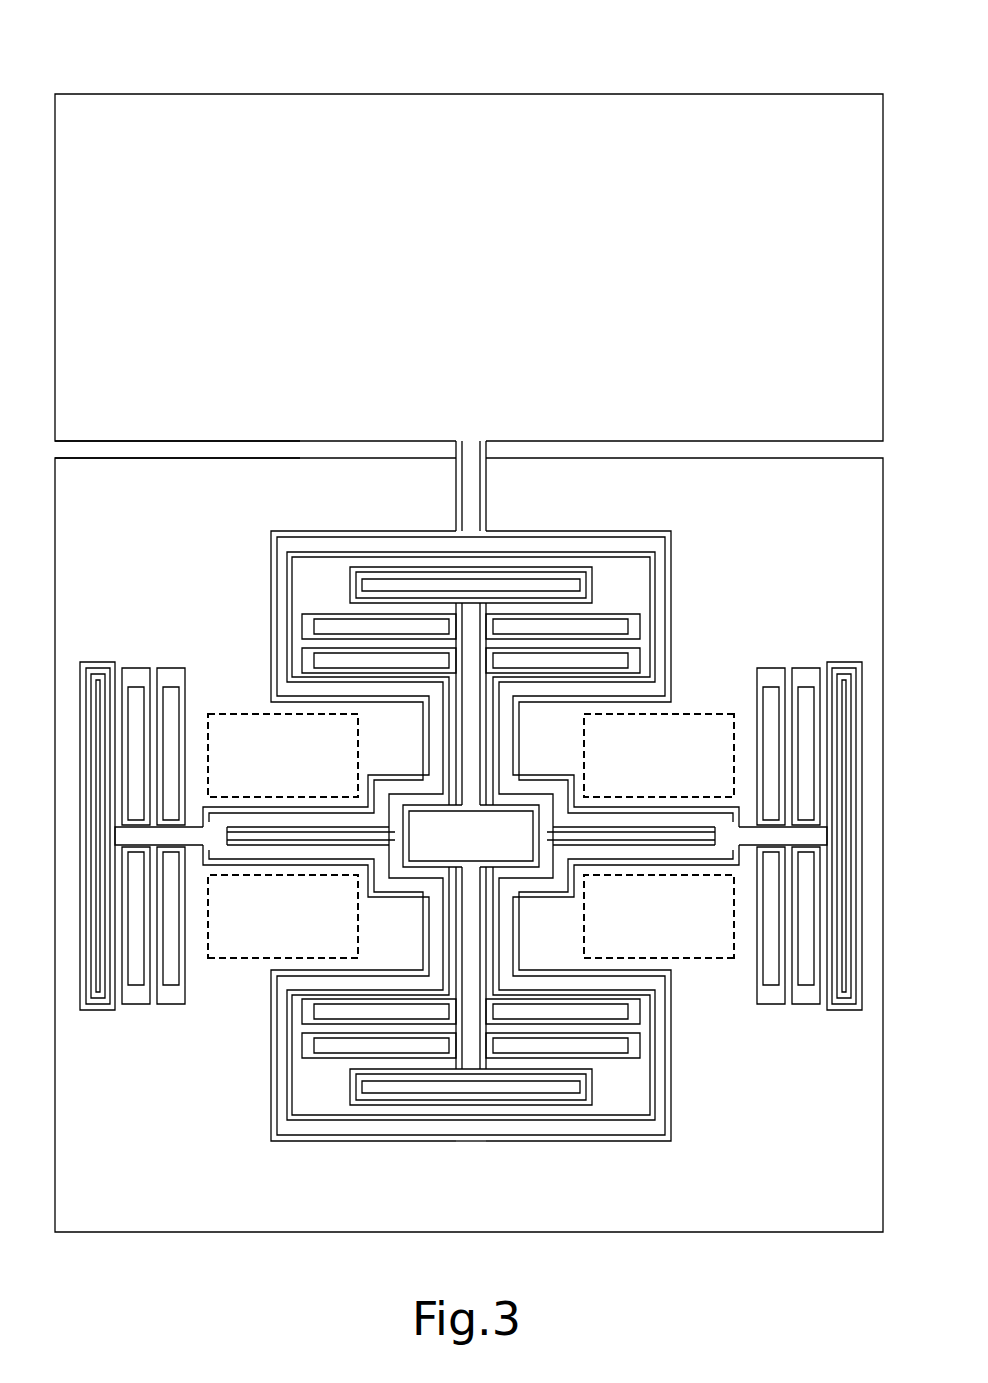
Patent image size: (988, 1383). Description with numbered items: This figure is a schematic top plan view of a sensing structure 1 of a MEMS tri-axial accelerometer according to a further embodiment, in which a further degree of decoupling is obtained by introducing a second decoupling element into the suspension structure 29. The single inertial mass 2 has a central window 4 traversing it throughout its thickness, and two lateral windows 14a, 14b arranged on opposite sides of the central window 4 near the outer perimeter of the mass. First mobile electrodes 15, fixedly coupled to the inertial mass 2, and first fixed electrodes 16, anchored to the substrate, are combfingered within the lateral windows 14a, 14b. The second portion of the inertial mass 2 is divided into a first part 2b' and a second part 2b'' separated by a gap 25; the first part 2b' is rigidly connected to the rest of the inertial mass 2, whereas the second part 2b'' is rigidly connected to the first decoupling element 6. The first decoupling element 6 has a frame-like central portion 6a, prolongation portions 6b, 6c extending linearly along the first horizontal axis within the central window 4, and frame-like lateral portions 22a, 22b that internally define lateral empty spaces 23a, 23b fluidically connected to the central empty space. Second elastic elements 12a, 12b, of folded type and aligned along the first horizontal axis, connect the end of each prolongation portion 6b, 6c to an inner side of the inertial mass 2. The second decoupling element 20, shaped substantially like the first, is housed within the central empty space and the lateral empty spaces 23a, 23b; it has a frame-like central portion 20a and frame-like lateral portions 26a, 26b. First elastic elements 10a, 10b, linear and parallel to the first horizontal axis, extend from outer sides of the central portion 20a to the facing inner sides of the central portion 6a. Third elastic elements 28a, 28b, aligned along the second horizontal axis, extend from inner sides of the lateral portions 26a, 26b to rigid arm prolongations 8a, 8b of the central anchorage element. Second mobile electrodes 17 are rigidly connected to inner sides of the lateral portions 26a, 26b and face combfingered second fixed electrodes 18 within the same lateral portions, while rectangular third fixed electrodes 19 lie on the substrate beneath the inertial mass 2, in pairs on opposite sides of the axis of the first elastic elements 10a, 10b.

The sensing structure 1 is at (130, 66).
The inertial mass 2 is at (49, 1130).
The first part of the second portion of the inertial mass 2b' is at (445, 834).
The second part of the second portion of the inertial mass 2b'' is at (495, 312).
The gap 25 is at (79, 447).
The central window 4 is at (285, 1139).
The first decoupling element 6 is at (215, 818).
The central portion 6a is at (549, 880).
The prolongation portion 6b is at (296, 814).
The prolongation portion 6c is at (702, 693).
The prolongation of the anchorage element 8a is at (465, 640).
The prolongation of the anchorage element 8b is at (468, 1042).
The first elastic element 10a is at (250, 836).
The first elastic element 10b is at (692, 836).
The second elastic element 12a is at (104, 1010).
The second elastic element 12b is at (845, 1009).
The lateral window 14a is at (82, 697).
The lateral window 14b is at (848, 688).
The first mobile electrodes 15 is at (137, 1002).
The first fixed electrodes 16 is at (146, 980).
The second mobile electrodes 17 is at (590, 645).
The second fixed electrodes 18 is at (562, 628).
The third fixed electrodes 19 is at (229, 950).
The second decoupling element 20 is at (613, 586).
The central portion 20a is at (432, 802).
The lateral portion 22a is at (659, 577).
The lateral portion 22b is at (661, 1099).
The lateral empty space 23a is at (655, 567).
The lateral empty space 23b is at (616, 1114).
The lateral portion 26a is at (644, 626).
The lateral portion 26b is at (625, 1092).
The third elastic element 28a is at (432, 577).
The third elastic element 28b is at (386, 1094).
The suspension structure 29 is at (460, 1110).